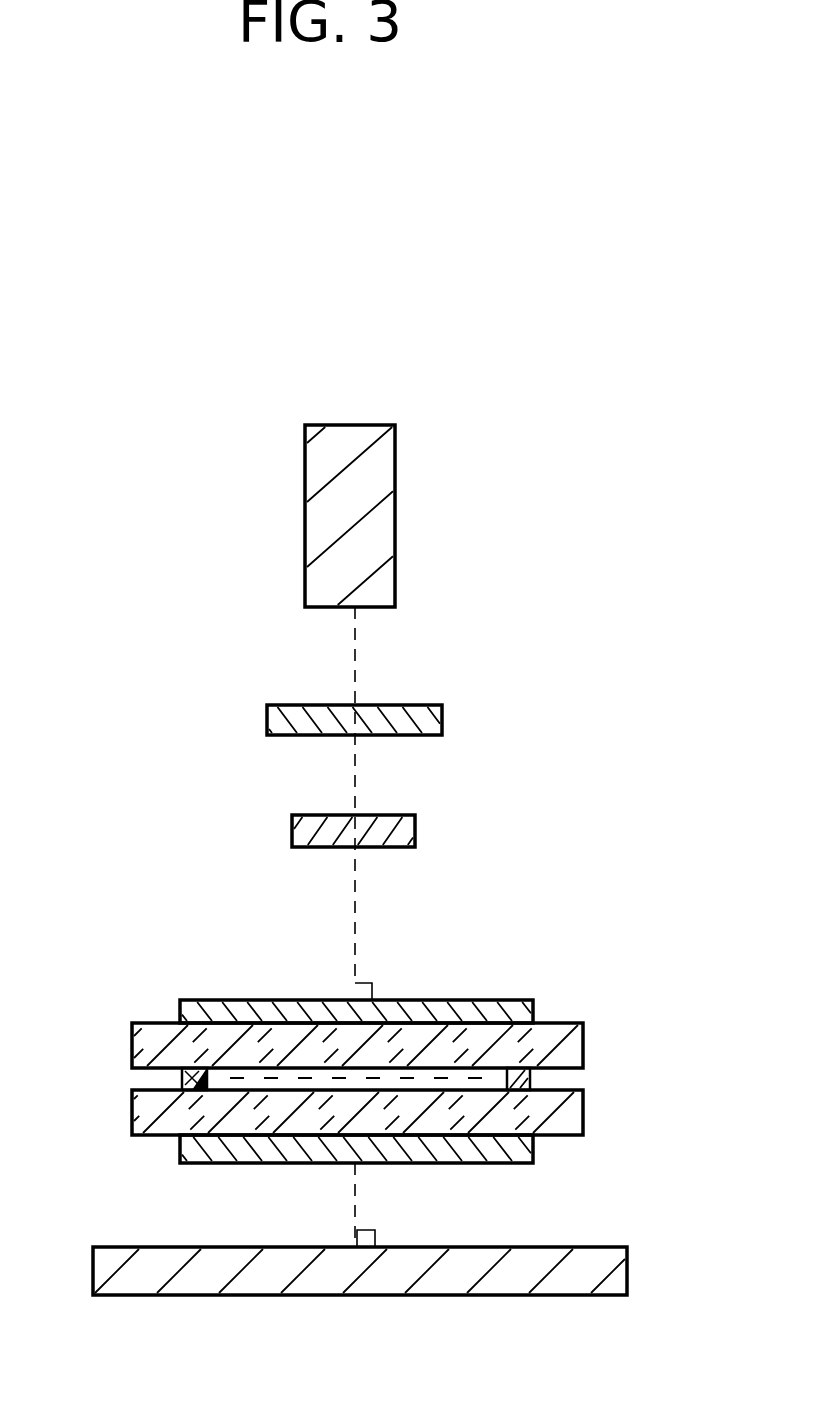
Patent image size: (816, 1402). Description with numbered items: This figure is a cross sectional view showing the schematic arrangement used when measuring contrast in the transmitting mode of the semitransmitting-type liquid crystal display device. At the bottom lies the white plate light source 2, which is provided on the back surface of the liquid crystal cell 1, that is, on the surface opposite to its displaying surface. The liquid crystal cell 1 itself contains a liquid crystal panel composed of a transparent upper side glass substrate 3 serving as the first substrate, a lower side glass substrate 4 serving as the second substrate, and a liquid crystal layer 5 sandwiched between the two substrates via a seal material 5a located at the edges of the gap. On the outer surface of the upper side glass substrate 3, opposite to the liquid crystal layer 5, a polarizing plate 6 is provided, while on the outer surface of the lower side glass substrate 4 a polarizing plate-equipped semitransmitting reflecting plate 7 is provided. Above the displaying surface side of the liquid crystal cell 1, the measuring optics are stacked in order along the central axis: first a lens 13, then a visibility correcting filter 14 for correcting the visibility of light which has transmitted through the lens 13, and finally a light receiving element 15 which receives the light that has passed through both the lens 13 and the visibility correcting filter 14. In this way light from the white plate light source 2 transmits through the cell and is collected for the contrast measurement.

The liquid crystal cell 1 is at (95, 983).
The white plate light source 2 is at (627, 1277).
The upper side glass substrate 3 is at (583, 1038).
The lower side glass substrate 4 is at (583, 1113).
The liquid crystal layer 5 is at (455, 1083).
The seal material 5a is at (187, 1073).
The polarizing plate 6 is at (512, 1000).
The polarizing plate-equipped semitransmitting reflecting plate 7 is at (533, 1165).
The lens 13 is at (415, 832).
The visibility correcting filter 14 is at (442, 720).
The light receiving element 15 is at (388, 507).